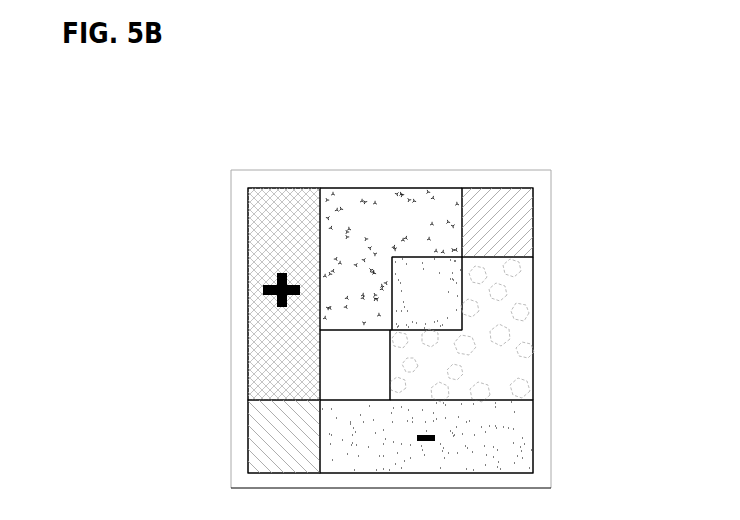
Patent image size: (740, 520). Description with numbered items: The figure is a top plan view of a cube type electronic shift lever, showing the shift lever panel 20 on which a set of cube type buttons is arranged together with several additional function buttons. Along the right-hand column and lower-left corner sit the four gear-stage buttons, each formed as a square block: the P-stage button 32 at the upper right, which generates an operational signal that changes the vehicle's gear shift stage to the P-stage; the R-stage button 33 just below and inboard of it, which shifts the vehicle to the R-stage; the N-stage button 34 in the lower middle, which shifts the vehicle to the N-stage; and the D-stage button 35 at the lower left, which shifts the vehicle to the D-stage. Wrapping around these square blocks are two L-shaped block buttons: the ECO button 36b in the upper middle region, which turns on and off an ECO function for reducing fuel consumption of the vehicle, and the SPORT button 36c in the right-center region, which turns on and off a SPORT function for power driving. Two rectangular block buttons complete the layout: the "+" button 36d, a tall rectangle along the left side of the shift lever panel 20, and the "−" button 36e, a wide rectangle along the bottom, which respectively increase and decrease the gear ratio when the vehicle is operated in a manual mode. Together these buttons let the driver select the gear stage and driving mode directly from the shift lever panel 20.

The shift lever panel 20 is at (433, 178).
The P-stage button 32 is at (525, 220).
The R-stage button 33 is at (447, 292).
The N-stage button 34 is at (328, 362).
The D-stage button 35 is at (260, 433).
The ECO button 36b is at (339, 190).
The SPORT button 36c is at (502, 341).
The "+" button 36d is at (283, 237).
The "−" button 36e is at (478, 437).